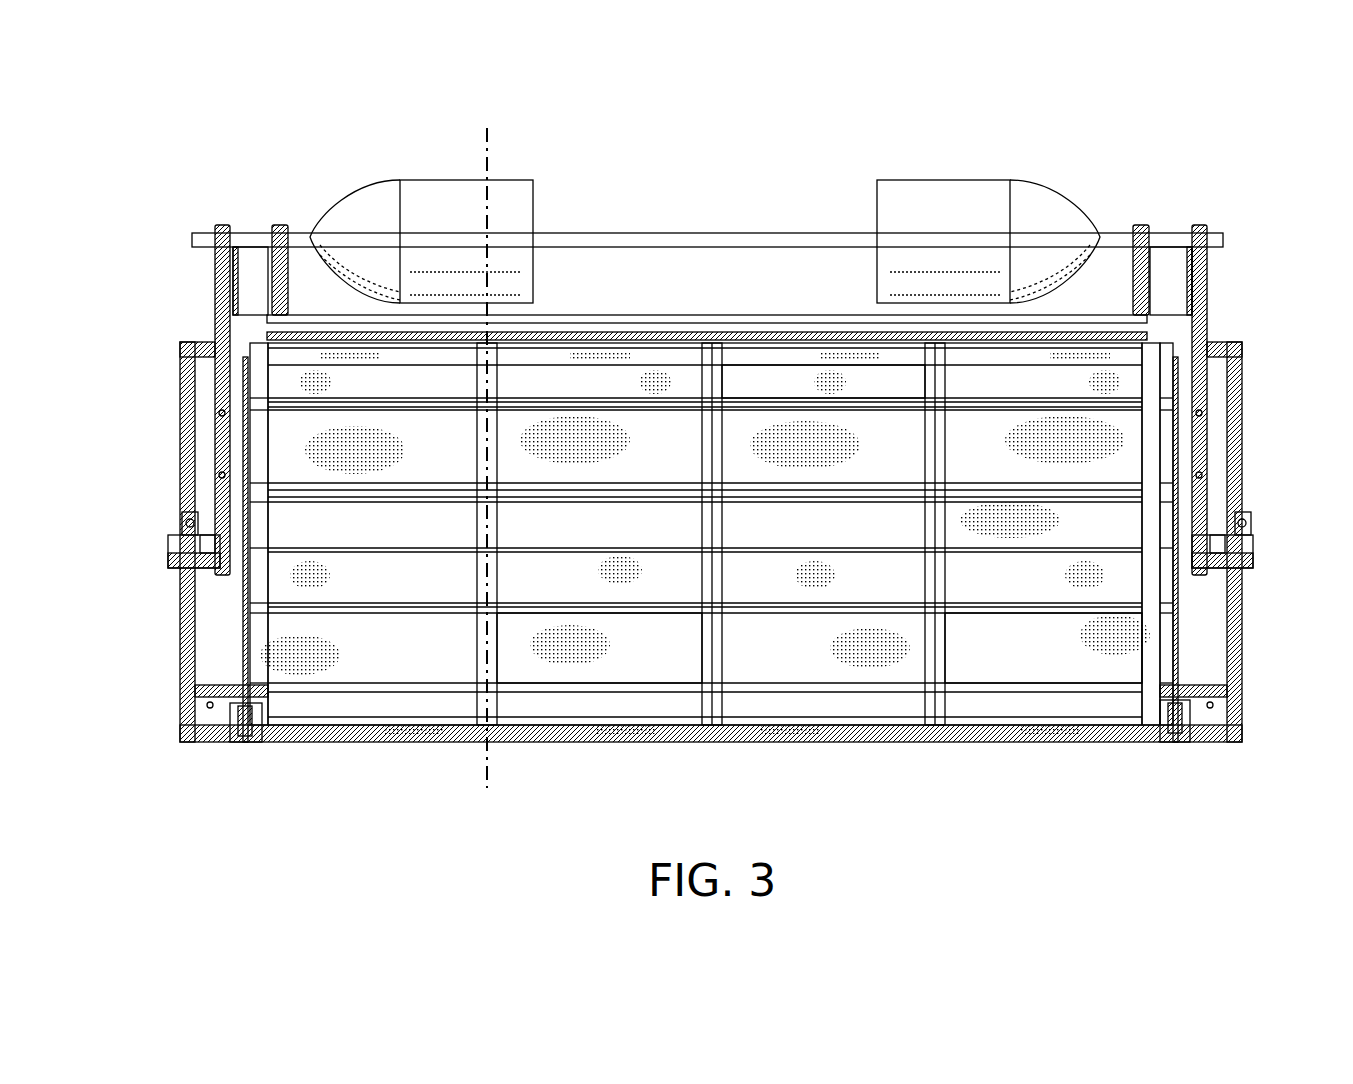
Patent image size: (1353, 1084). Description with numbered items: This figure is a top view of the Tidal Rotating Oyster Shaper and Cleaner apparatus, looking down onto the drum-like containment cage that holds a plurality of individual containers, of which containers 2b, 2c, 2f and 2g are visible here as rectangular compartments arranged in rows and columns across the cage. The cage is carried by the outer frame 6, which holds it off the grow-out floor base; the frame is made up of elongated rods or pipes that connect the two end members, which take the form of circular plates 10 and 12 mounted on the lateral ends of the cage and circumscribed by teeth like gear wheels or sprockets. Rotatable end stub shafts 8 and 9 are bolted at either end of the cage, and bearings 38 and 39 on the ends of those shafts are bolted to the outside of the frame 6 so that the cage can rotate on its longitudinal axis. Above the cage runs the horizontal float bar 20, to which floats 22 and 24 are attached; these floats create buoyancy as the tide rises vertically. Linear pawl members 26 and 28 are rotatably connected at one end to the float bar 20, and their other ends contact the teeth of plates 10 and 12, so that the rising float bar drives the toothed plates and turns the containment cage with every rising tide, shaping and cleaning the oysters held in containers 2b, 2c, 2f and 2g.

The outer frame 6 is at (487, 128).
The rotatable end stub shaft 8 is at (1255, 548).
The rotatable end stub shaft 9 is at (168, 548).
The circular plate 10 is at (1175, 433).
The circular plate 12 is at (245, 440).
The horizontal float bar 20 is at (708, 243).
The float 22 is at (950, 215).
The float 24 is at (513, 212).
The linear pawl member 26 is at (1172, 283).
The linear pawl member 28 is at (252, 278).
The bearing 38 is at (1212, 535).
The bearing 39 is at (208, 535).
The individual container 2b is at (598, 383).
The individual container 2c is at (655, 650).
The individual container 2f is at (992, 655).
The individual container 2g is at (782, 383).